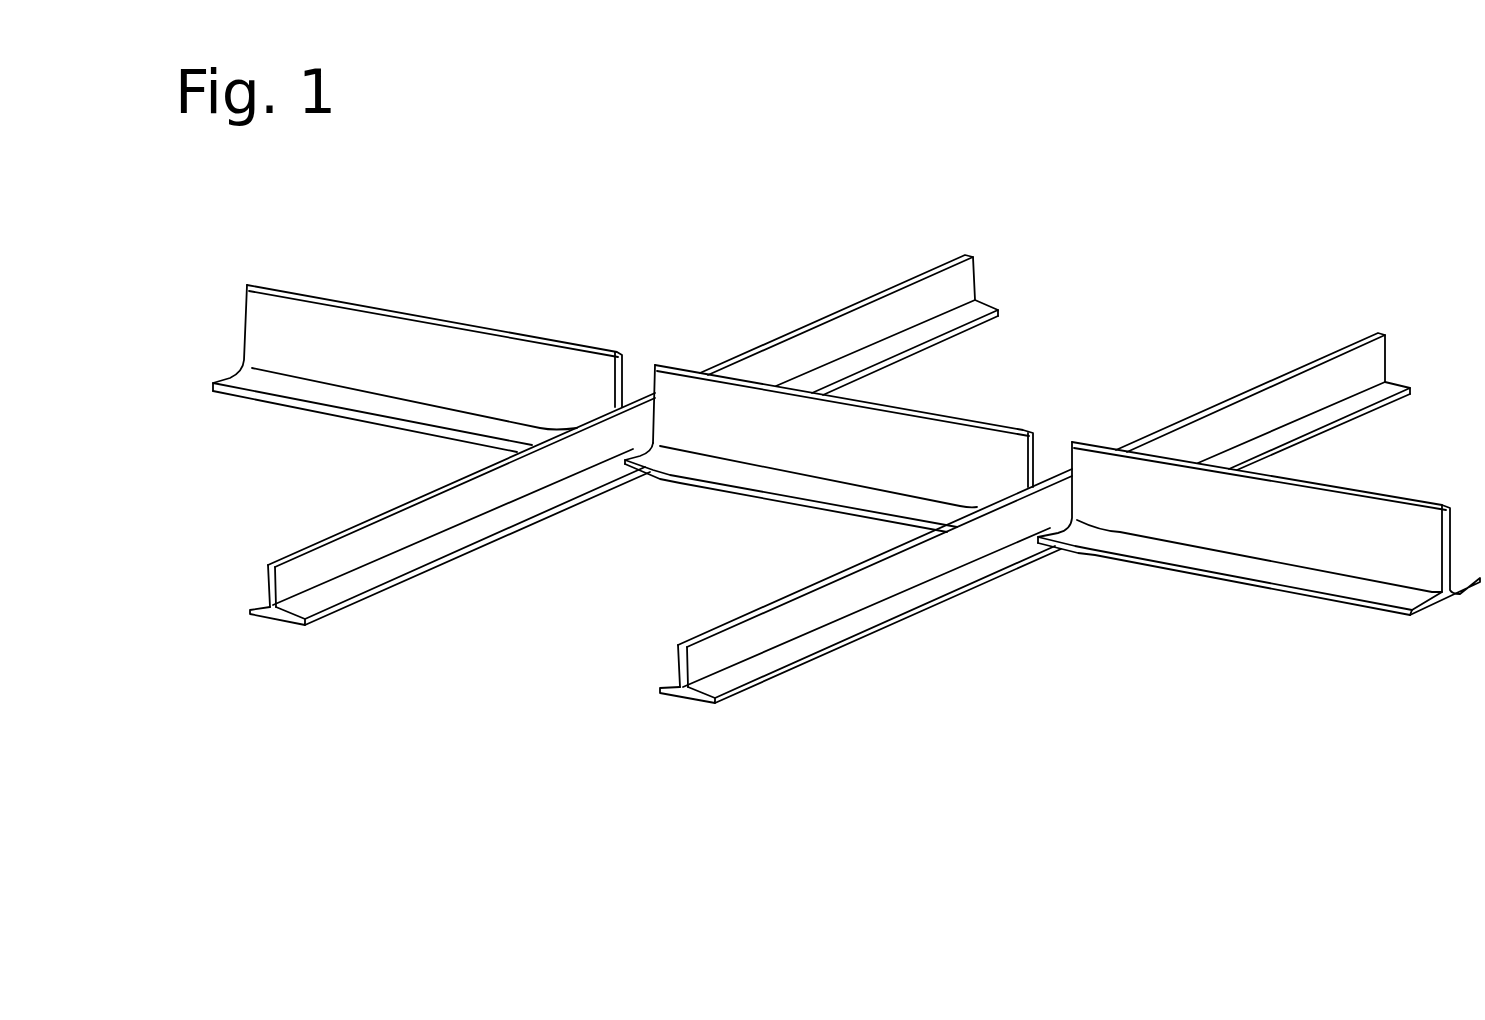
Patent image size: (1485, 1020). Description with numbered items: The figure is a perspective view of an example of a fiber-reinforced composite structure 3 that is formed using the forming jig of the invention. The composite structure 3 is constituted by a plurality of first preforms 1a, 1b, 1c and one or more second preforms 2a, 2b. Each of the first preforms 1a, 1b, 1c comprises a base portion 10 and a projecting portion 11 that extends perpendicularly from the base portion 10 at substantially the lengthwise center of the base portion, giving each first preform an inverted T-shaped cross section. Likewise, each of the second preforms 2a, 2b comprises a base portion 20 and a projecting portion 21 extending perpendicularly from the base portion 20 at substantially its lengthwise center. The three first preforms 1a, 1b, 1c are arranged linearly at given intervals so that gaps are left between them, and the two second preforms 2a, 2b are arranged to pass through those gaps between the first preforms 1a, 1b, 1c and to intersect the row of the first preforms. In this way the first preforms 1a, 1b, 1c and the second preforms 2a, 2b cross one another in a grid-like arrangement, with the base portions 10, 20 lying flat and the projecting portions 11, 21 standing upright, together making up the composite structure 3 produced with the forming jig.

The fiber-reinforced composite structure 3 is at (812, 192).
The first preform 1a is at (478, 316).
The first preform 1b is at (914, 398).
The first preform 1c is at (1328, 476).
The second preform 2a is at (532, 541).
The second preform 2b is at (978, 616).
The base portion 10 is at (738, 479).
The projecting portion 11 is at (707, 392).
The base portion 20 is at (350, 590).
The projecting portion 21 is at (375, 543).